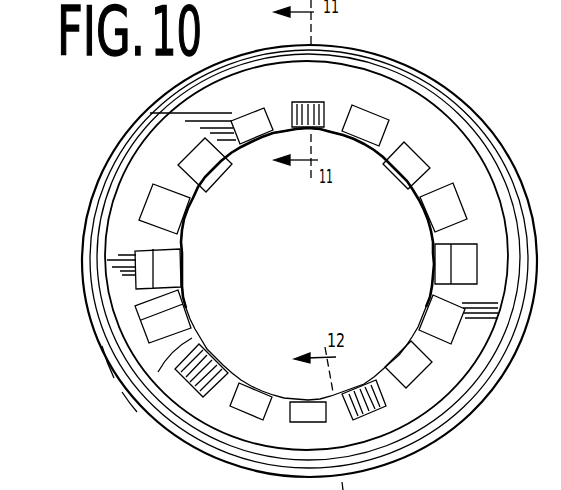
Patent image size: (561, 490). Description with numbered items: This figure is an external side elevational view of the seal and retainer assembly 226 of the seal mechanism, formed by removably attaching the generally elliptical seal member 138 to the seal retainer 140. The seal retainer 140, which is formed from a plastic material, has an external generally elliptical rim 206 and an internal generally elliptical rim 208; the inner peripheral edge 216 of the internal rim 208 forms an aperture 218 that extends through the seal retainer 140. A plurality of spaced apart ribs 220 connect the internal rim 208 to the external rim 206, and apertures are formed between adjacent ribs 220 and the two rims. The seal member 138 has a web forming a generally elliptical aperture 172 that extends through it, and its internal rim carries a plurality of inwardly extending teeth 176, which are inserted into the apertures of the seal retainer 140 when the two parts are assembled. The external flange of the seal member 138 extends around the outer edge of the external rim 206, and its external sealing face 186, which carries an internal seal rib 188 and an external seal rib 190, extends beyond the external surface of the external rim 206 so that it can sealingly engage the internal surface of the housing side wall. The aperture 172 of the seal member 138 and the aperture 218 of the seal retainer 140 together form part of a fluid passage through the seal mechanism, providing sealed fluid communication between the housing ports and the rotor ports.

The seal member 138 is at (86, 238).
The seal retainer 140 is at (184, 293).
The aperture 172 is at (316, 258).
The teeth 176 is at (166, 201).
The external sealing face 186 is at (96, 292).
The internal seal rib 188 is at (156, 397).
The external seal rib 190 is at (106, 358).
The external rim 206 is at (192, 333).
The internal rim 208 is at (177, 322).
The inner peripheral edge 216 is at (427, 212).
The aperture 218 is at (320, 292).
The ribs 220 is at (212, 374).
The seal and retainer assembly 226 is at (360, 45).